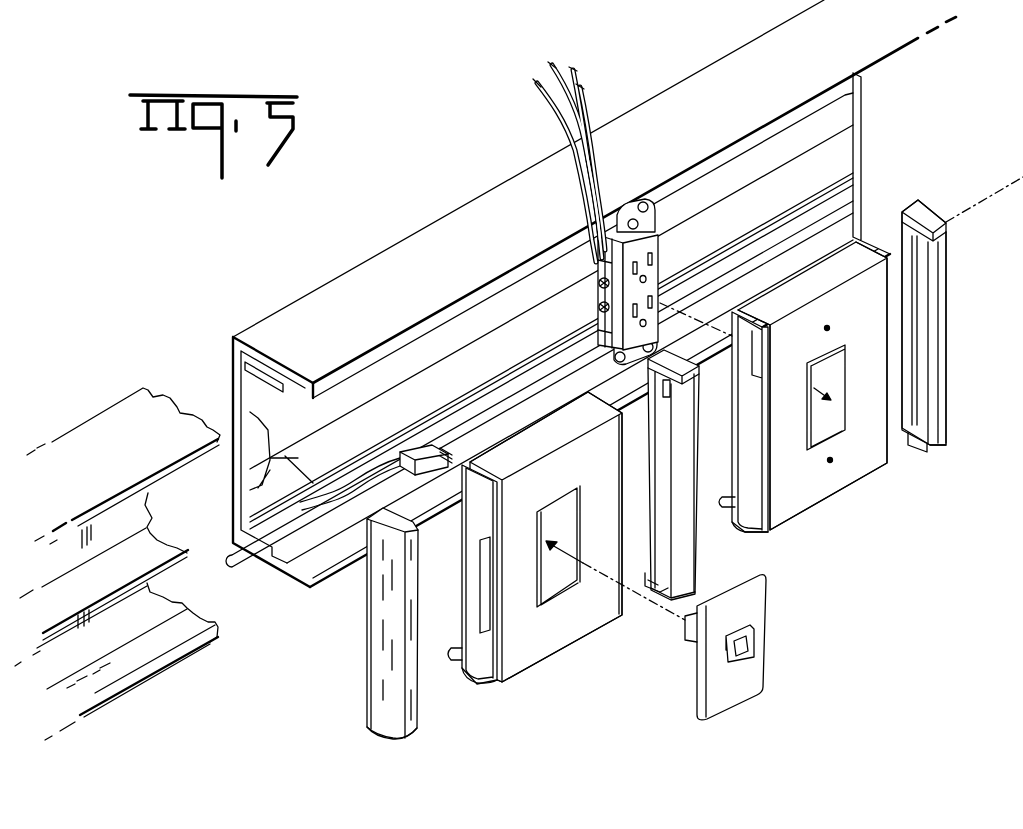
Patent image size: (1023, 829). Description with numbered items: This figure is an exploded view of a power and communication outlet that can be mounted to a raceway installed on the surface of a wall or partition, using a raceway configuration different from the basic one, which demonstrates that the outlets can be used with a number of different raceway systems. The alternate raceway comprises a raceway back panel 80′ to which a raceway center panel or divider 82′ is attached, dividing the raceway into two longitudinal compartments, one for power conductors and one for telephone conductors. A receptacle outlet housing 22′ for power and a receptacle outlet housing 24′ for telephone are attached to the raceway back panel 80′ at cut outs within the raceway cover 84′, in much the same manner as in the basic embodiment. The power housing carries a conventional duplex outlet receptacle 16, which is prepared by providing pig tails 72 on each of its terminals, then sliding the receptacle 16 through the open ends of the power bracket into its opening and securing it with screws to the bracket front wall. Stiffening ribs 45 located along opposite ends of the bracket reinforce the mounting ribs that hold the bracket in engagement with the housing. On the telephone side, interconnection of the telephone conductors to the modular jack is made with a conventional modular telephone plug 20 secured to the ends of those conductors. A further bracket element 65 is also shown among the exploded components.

The duplex outlet receptacle 16 is at (653, 270).
The modular telephone plug 20 is at (428, 446).
The receptacle outlet housing 22′ is at (814, 495).
The receptacle outlet housing 24′ is at (539, 646).
The stiffening ribs 45 is at (744, 350).
The mounting bracket 65 is at (472, 597).
The pig tails 72 is at (577, 184).
The raceway back panel 80′ is at (234, 386).
The raceway center panel or divider 82′ is at (244, 482).
The raceway cover 84′ is at (973, 177).